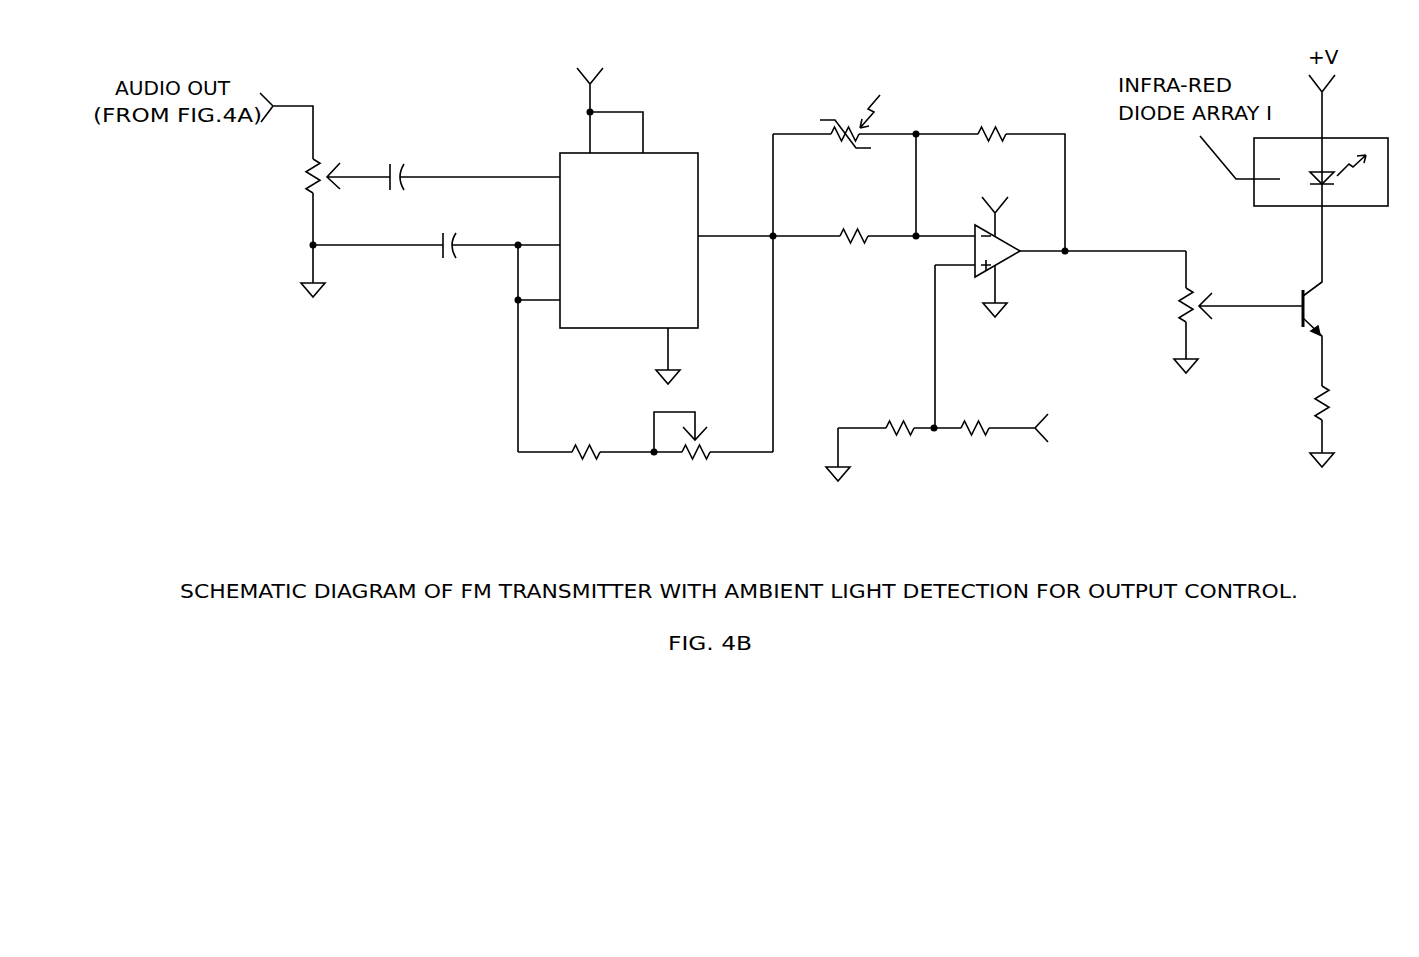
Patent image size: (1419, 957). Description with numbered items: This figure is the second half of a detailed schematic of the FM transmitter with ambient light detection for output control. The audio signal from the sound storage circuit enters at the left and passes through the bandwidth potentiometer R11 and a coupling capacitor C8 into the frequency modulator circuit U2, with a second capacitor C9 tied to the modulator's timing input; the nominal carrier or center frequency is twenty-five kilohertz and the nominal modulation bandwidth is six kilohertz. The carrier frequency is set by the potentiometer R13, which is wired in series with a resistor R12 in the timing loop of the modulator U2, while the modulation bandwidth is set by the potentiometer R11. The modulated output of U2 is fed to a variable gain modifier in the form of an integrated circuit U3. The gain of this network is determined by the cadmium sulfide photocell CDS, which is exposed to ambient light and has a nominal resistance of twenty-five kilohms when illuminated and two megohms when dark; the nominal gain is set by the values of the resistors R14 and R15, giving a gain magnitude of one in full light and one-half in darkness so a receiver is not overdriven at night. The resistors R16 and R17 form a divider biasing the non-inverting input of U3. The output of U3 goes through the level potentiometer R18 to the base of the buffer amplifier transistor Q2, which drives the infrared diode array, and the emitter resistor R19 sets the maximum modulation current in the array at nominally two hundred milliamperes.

The potentiometer R11 is at (271, 224).
The capacitor 0.1 C8 is at (470, 177).
The capacitor 0.001 C9 is at (436, 246).
The frequency modulator circuit U2 is at (654, 215).
The resistor 24K 1% R12 is at (586, 453).
The potentiometer R13 is at (695, 473).
The cadmium sulfide photocell CDS is at (836, 102).
The resistor R14 is at (874, 236).
The resistor R15 is at (990, 175).
The variable gain modifier integrated circuit U3 is at (1060, 301).
The resistor 12K R16 is at (880, 436).
The resistor 12K R17 is at (1015, 428).
The potentiometer R18 is at (1212, 312).
The transistor Q2 is at (1354, 296).
The resistor R19 is at (1294, 422).